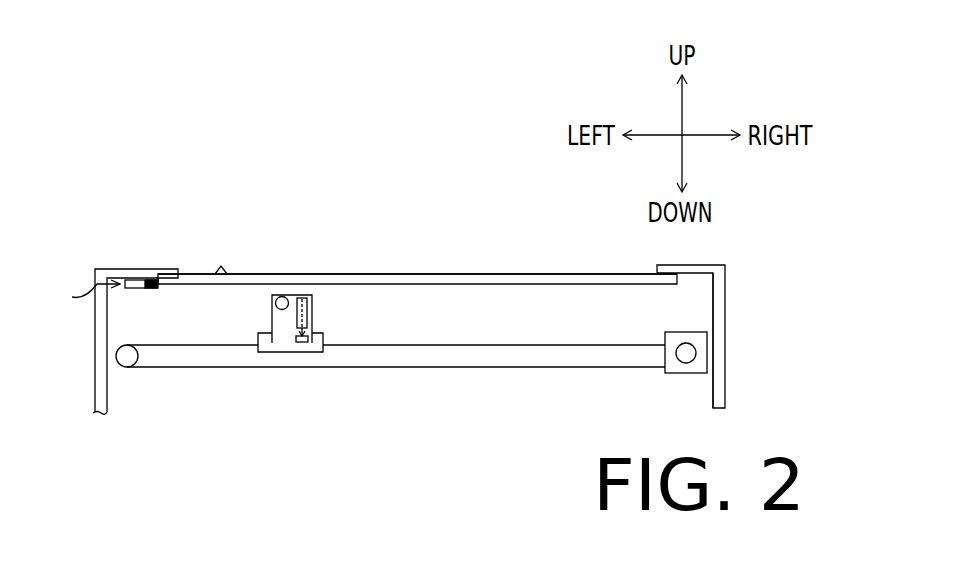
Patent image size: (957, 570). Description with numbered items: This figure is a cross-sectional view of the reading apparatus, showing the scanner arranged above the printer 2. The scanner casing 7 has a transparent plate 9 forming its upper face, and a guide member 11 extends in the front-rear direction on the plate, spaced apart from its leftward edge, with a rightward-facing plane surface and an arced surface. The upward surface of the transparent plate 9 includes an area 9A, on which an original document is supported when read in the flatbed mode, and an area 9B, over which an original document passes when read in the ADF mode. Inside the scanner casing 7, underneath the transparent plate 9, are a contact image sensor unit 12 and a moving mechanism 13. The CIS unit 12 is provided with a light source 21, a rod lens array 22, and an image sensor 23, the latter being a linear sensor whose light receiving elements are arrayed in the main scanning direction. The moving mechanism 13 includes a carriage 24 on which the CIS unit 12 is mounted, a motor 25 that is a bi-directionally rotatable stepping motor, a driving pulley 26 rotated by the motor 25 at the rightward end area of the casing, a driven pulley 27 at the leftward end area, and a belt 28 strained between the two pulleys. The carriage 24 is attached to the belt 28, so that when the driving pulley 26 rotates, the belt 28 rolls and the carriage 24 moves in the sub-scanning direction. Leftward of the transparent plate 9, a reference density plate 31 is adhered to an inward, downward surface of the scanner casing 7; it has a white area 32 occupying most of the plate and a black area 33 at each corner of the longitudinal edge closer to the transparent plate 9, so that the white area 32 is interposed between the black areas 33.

The printer 2 is at (720, 336).
The scanner casing 7 is at (714, 357).
The transparent plate 9 is at (417, 225).
The area 9A is at (580, 273).
The area 9B is at (195, 273).
The guide member 11 is at (222, 266).
The contact image sensor (CIS) unit 12 is at (314, 312).
The moving mechanism 13 is at (666, 363).
The light source 21 is at (283, 296).
The rod lens array 22 is at (289, 295).
The image sensor 23 is at (302, 343).
The carriage 24 is at (323, 351).
The motor 25 is at (684, 373).
The driving pulley 26 is at (684, 343).
The driven pulley 27 is at (129, 367).
The belt 28 is at (452, 367).
The reference density plate 31 is at (79, 297).
The white area 32 is at (132, 280).
The black area 33 is at (148, 280).